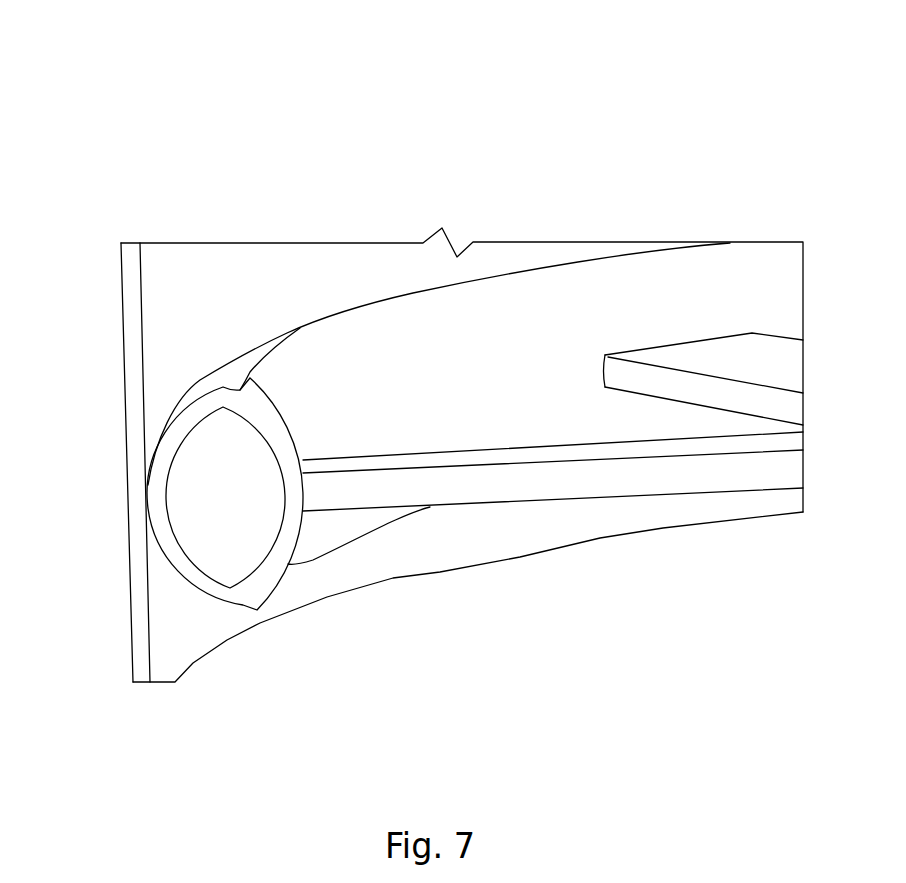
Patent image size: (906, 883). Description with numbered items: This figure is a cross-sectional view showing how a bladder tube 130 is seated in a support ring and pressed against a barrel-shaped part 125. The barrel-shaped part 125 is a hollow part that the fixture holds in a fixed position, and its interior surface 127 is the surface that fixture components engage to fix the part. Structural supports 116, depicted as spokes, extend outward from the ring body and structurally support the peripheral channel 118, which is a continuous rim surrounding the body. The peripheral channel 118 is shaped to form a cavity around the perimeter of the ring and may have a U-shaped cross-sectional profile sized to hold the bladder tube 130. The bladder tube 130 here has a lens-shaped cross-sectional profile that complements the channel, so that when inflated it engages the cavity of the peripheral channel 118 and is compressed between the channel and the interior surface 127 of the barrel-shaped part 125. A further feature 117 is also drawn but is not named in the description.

The structural support 116 is at (607, 455).
The tubular member 117 is at (285, 484).
The peripheral channel 118 is at (413, 370).
The barrel-shaped part 125 is at (132, 303).
The interior surface 127 is at (177, 608).
The bladder tube 130 is at (208, 405).